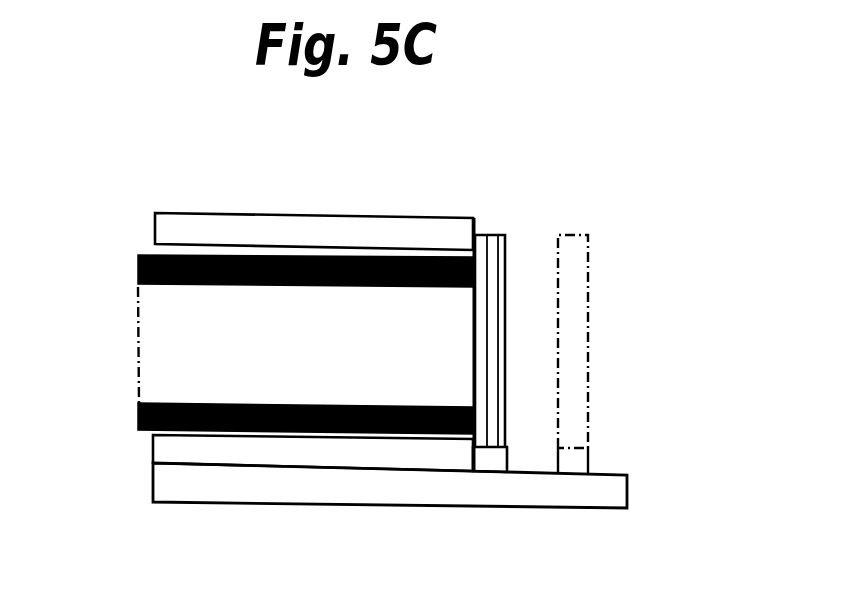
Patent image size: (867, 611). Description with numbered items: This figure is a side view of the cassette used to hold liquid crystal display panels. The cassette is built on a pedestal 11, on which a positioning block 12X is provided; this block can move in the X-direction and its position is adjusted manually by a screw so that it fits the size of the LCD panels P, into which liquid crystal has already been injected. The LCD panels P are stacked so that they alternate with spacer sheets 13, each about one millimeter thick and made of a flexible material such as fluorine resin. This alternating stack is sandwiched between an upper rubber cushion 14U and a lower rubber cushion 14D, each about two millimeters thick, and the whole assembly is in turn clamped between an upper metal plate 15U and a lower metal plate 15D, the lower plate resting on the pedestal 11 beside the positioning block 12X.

The pedestal 11 is at (613, 494).
The positioning block 12X is at (588, 327).
The spacer sheet 13 is at (138, 268).
The rubber cushion 14U is at (153, 255).
The rubber cushion 14D is at (152, 432).
The metal plate 15U is at (320, 229).
The metal plate 15D is at (185, 452).
The LCD panel P is at (138, 258).